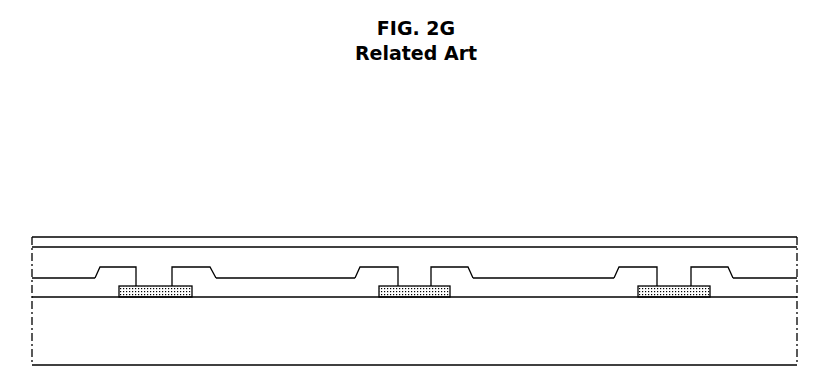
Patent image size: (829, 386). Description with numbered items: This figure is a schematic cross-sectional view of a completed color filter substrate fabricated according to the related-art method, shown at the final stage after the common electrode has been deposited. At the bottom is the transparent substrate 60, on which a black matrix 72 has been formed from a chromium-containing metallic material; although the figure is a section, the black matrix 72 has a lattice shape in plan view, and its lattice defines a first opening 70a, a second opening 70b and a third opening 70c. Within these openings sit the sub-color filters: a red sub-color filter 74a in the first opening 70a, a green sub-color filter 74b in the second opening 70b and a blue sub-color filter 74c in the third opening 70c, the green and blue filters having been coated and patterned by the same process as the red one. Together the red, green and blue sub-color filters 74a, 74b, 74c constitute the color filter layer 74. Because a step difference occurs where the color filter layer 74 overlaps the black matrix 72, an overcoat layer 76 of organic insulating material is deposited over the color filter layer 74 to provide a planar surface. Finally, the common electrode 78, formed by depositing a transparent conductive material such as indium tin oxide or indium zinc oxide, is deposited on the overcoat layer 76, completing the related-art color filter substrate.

The transparent substrate 60 is at (757, 343).
The first opening 70a is at (251, 255).
The second opening 70b is at (597, 254).
The third opening 70c is at (81, 254).
The black matrix 72 is at (154, 297).
The color filter layer 74 is at (425, 183).
The red sub-color filter 74a is at (326, 285).
The green sub-color filter 74b is at (497, 285).
The blue sub-color filter 74c is at (684, 214).
The overcoat layer 76 is at (153, 257).
The common electrode 78 is at (204, 243).